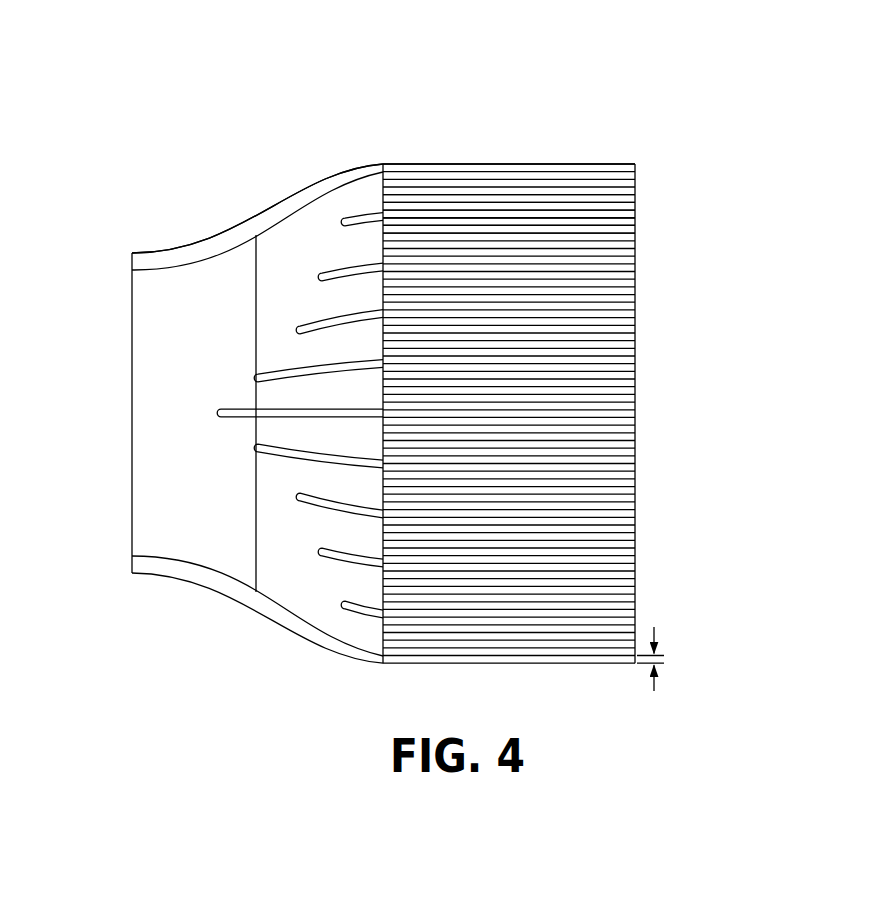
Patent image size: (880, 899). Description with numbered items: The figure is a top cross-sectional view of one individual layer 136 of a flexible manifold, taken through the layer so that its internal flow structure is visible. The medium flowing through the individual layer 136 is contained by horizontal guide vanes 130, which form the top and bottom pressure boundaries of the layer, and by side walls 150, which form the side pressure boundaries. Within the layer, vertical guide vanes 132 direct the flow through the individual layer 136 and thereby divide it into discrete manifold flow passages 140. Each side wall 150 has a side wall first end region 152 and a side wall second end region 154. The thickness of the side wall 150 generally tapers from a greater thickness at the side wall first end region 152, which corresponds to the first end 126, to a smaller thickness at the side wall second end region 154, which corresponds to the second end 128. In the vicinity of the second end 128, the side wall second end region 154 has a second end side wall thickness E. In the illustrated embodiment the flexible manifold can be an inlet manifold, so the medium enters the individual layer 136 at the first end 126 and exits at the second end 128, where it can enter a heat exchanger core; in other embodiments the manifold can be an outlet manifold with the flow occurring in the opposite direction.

The first end 126 is at (97, 393).
The second end 128 is at (690, 377).
The horizontal guide vane 130 is at (290, 243).
The vertical guide vanes 132 is at (438, 233).
The individual layer 136 is at (579, 70).
The discrete manifold flow passage 140 is at (632, 222).
The side wall 150 is at (300, 190).
The side wall first end region 152 is at (168, 258).
The side wall second end region 154 is at (508, 162).
The second end side wall thickness E is at (658, 659).